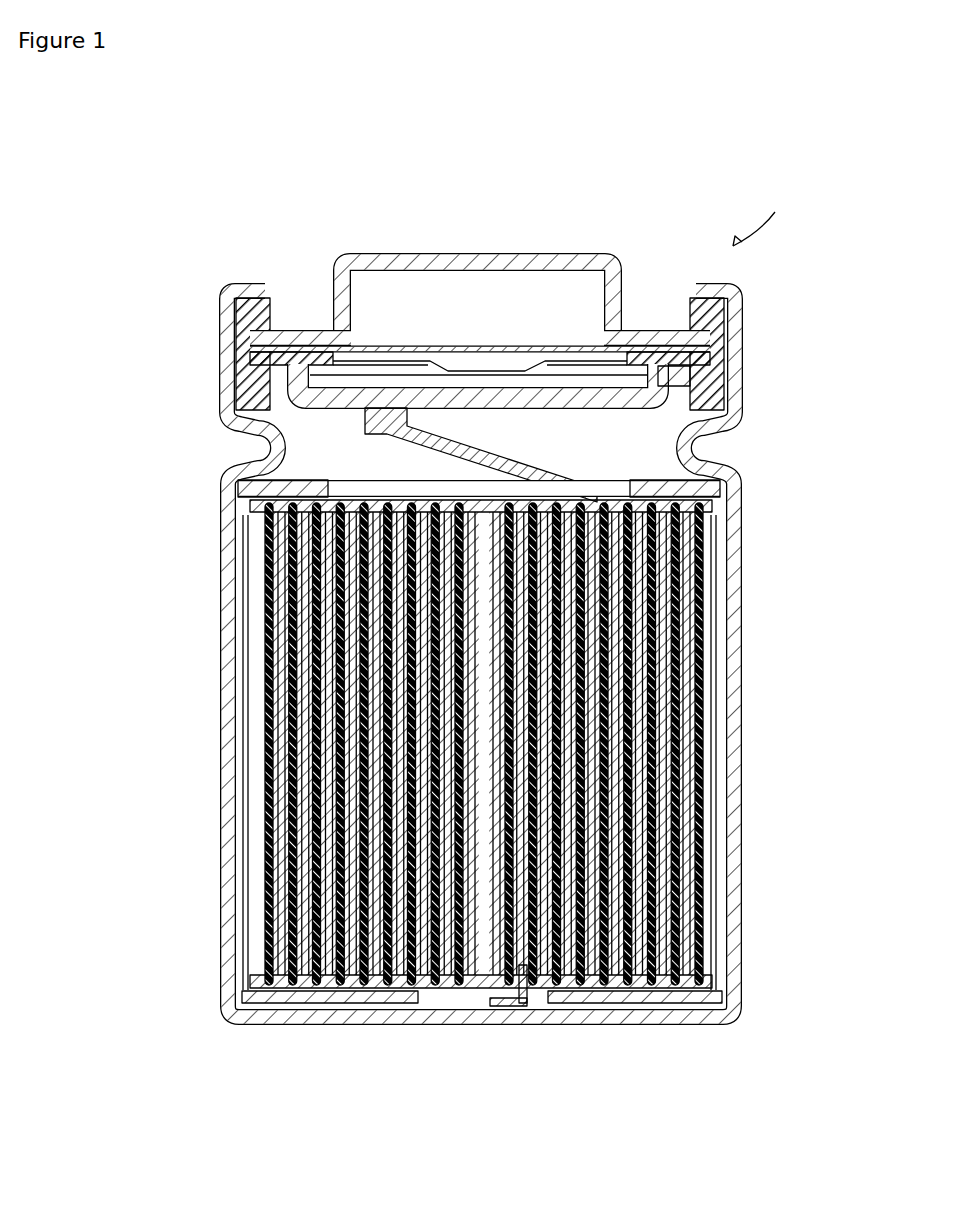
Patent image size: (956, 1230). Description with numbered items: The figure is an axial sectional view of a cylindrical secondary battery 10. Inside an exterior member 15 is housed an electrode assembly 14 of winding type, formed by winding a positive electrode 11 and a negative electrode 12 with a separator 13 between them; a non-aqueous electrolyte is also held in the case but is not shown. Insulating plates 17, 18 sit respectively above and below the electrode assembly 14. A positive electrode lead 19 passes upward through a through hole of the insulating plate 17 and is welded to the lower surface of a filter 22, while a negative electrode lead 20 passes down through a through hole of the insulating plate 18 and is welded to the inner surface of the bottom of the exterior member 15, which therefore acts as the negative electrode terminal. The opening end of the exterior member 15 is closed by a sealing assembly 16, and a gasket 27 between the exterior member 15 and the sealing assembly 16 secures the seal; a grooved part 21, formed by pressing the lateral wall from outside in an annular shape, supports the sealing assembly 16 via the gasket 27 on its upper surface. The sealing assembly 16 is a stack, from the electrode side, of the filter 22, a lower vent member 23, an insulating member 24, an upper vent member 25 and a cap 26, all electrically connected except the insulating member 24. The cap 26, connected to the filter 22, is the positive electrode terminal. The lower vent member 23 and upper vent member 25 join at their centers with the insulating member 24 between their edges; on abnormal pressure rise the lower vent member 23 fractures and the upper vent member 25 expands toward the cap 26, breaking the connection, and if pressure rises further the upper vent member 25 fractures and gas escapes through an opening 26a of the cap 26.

The secondary battery 10 is at (846, 217).
The positive electrode 11 is at (700, 713).
The negative electrode 12 is at (706, 752).
The separator 13 is at (831, 690).
The electrode assembly 14 is at (560, 745).
The exterior member 15 is at (745, 291).
The sealing assembly 16 is at (480, 258).
The insulating plate 17 is at (745, 490).
The insulating plate 18 is at (730, 1000).
The positive electrode lead 19 is at (268, 440).
The negative electrode lead 20 is at (508, 1010).
The grooved part 21 is at (700, 443).
The filter 22 is at (732, 390).
The lower vent member 23 is at (421, 345).
The insulating member 24 is at (288, 330).
The upper vent member 25 is at (330, 293).
The cap 26 is at (560, 254).
The opening 26a is at (620, 298).
The gasket 27 is at (758, 320).